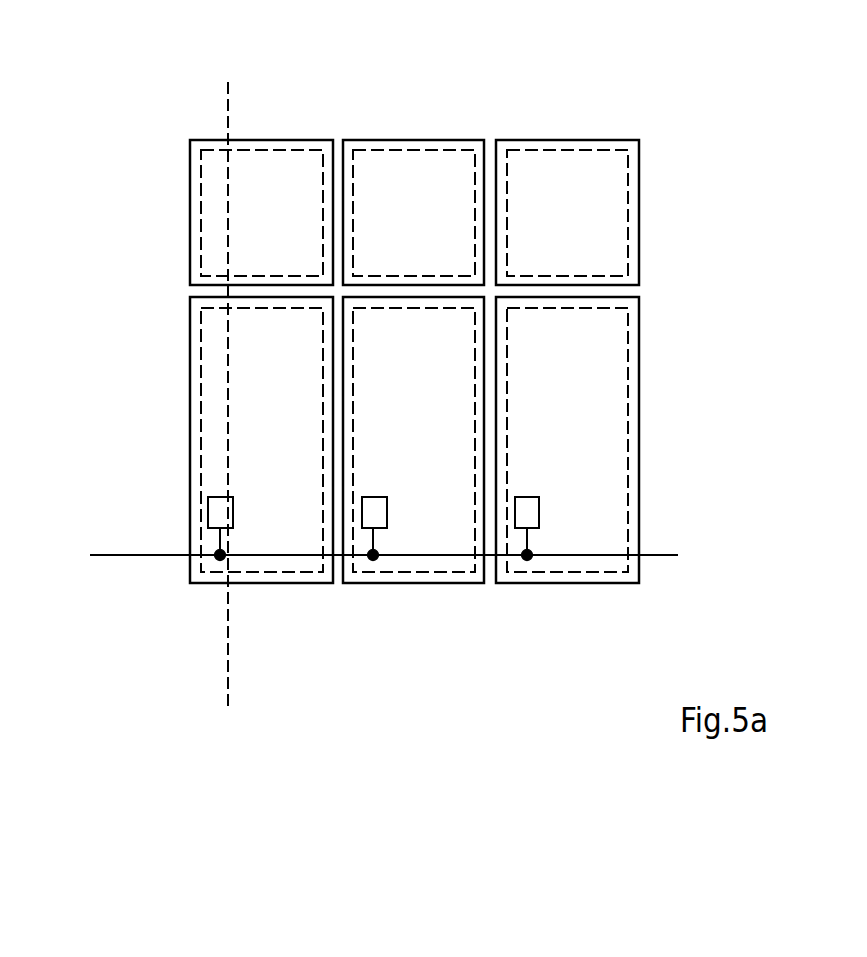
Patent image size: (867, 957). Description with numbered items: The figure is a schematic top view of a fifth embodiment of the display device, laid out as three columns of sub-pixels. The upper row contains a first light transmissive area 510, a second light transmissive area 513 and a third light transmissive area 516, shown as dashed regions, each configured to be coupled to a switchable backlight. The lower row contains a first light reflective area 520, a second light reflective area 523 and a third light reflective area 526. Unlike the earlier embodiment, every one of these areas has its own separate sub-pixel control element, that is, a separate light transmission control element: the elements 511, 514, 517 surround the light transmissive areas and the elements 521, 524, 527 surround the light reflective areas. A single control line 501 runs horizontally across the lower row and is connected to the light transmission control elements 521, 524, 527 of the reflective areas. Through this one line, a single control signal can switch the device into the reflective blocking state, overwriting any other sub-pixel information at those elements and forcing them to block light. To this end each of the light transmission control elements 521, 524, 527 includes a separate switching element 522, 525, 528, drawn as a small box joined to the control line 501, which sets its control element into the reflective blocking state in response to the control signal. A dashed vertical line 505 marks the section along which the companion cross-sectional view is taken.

The single control line 501 is at (365, 557).
The line 505 is at (229, 410).
The first light transmissive area 510 is at (303, 160).
The sub-pixel control element 511 is at (275, 140).
The second light transmissive area 513 is at (443, 160).
The sub-pixel control element 514 is at (417, 140).
The third light transmissive area 516 is at (598, 160).
The sub-pixel control element 517 is at (568, 140).
The first light reflective area 520 is at (303, 562).
The sub-pixel control element 521 is at (275, 583).
The switching element 522 is at (233, 507).
The second light reflective area 523 is at (445, 562).
The sub-pixel control element 524 is at (415, 583).
The switching element 525 is at (387, 507).
The third light reflective area 526 is at (598, 562).
The sub-pixel control element 527 is at (568, 583).
The switching element 528 is at (539, 507).